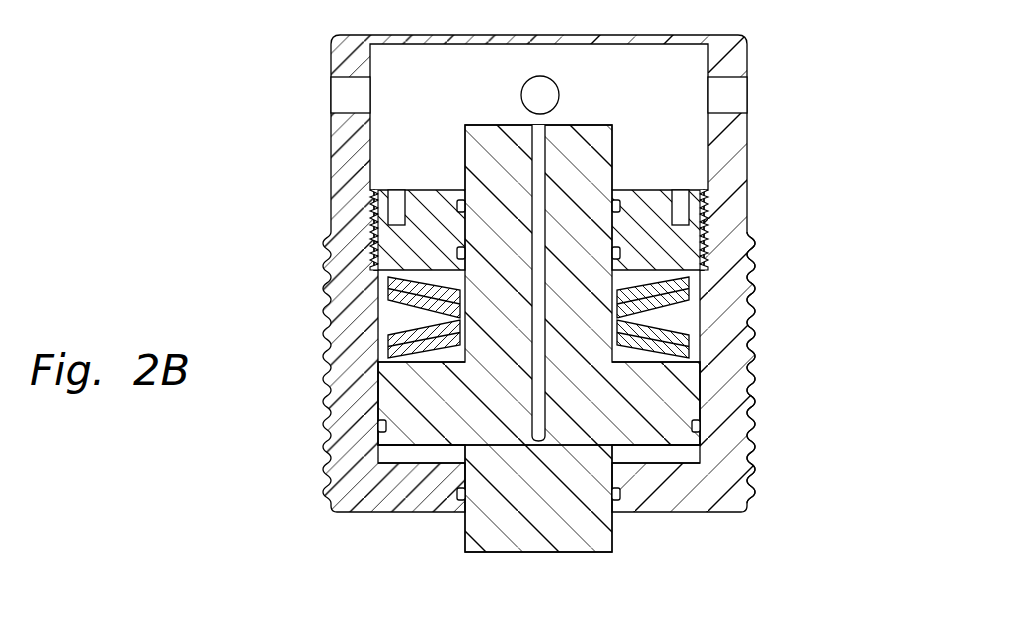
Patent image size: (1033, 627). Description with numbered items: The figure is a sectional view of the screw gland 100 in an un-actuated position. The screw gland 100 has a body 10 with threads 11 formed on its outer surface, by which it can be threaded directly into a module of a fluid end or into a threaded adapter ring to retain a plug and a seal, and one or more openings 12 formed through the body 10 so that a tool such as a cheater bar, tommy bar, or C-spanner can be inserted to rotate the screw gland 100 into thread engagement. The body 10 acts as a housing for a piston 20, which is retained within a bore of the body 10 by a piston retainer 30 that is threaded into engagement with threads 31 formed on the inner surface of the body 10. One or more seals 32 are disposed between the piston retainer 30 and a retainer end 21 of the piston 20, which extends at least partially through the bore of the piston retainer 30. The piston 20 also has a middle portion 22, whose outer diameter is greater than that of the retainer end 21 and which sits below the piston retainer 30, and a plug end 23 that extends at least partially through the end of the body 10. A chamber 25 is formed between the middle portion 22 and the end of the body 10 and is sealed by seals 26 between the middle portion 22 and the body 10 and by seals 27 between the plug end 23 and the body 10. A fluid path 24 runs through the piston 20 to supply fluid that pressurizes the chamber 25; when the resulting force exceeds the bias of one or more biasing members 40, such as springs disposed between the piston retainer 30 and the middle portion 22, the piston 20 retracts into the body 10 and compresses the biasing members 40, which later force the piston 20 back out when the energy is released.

The screw gland 100 is at (274, 42).
The body 10 is at (749, 150).
The threads 11 is at (756, 331).
The openings 12 is at (347, 96).
The piston 20 is at (481, 364).
The retainer end 21 is at (614, 148).
The middle portion 22 is at (390, 397).
The plug end 23 is at (538, 548).
The fluid path 24 is at (540, 158).
The chamber 25 is at (657, 455).
The seals 26 is at (378, 426).
The seals 27 is at (460, 496).
The piston retainer 30 is at (488, 203).
The threads 31 is at (378, 218).
The seals 32 is at (383, 240).
The biasing members 40 is at (387, 320).